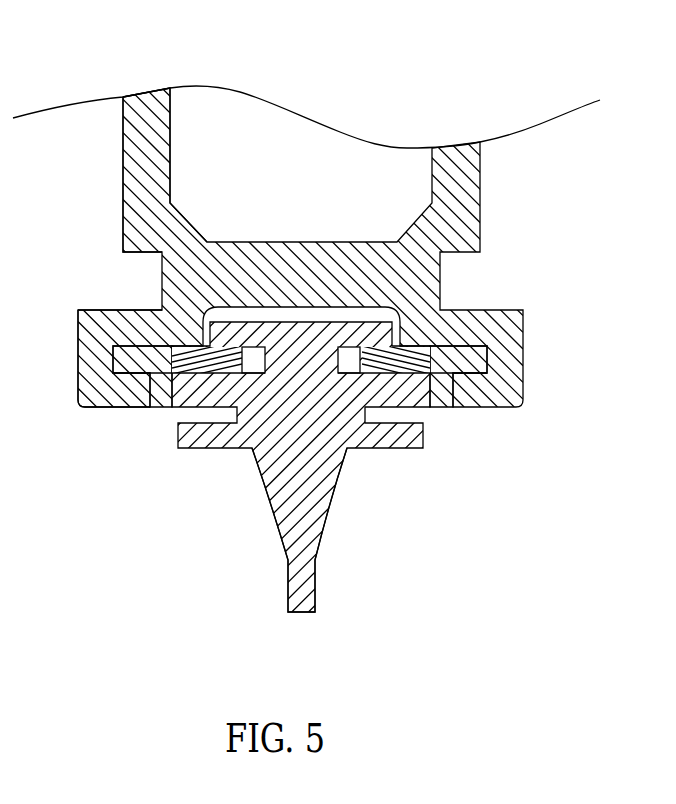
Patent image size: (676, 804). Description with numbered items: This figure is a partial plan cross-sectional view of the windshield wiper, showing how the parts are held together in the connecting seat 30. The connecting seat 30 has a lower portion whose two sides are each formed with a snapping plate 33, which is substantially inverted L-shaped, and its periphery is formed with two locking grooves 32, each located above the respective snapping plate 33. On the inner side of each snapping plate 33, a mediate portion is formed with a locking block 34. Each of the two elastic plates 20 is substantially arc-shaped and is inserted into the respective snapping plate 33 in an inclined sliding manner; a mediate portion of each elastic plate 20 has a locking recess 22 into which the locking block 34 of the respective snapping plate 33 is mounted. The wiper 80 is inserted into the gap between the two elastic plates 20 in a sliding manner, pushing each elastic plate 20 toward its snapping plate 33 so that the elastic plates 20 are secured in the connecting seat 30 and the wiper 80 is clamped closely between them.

The elastic plate 20 is at (398, 366).
The locking recess 22 is at (458, 347).
The connecting seat 30 is at (495, 197).
The locking groove 32 is at (147, 271).
The snapping plate 33 is at (105, 407).
The locking block 34 is at (160, 407).
The wiper 80 is at (362, 507).